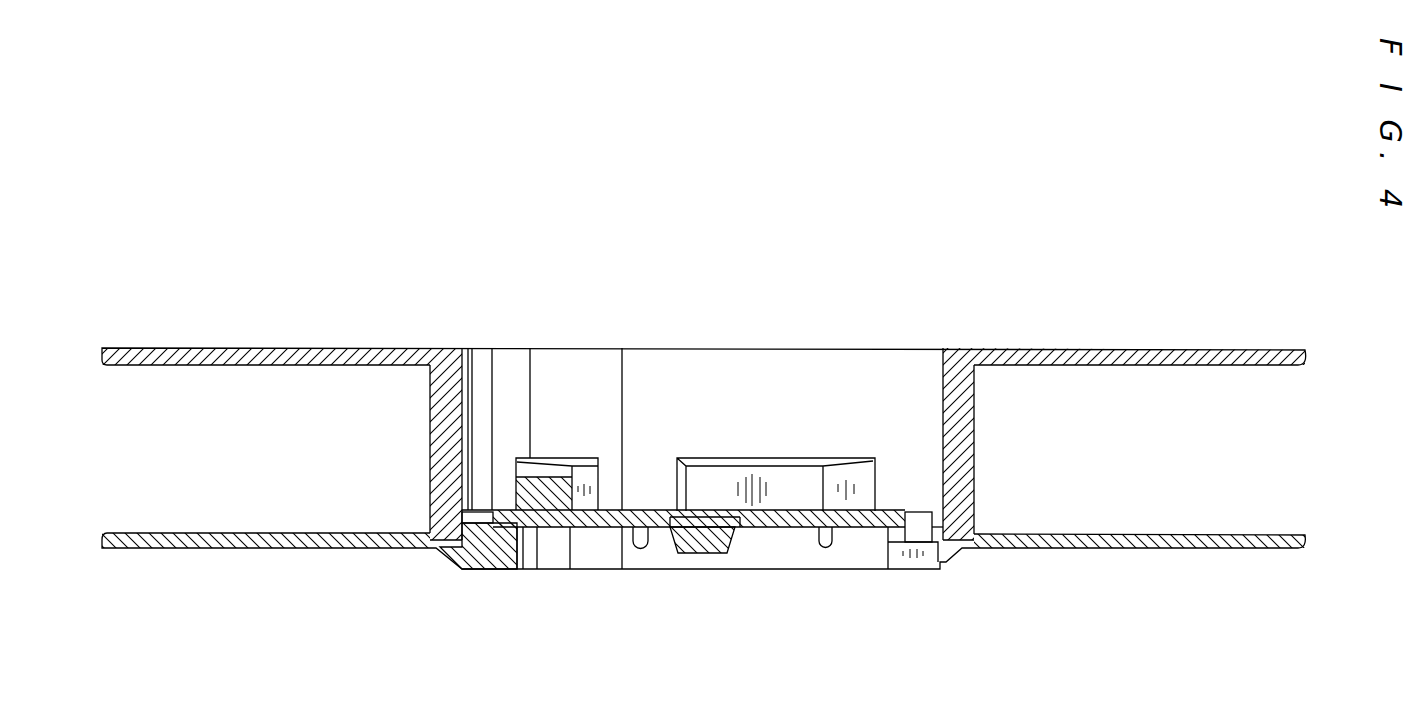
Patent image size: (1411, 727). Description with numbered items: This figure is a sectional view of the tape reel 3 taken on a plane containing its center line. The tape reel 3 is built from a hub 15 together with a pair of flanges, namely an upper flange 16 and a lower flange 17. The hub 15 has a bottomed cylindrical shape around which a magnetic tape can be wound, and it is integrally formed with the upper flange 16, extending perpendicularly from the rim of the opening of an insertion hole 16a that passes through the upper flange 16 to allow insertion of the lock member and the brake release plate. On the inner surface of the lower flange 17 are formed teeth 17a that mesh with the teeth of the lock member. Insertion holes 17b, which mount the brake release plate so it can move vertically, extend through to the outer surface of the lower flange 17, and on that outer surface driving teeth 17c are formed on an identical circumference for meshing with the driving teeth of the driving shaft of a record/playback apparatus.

The tape reel 3 is at (786, 253).
The hub 15 is at (977, 430).
The upper flange 16 is at (1242, 350).
The insertion hole 16a is at (877, 413).
The lower flange 17 is at (1200, 535).
The teeth 17a is at (562, 458).
The insertion holes 17b is at (930, 545).
The driving teeth 17c is at (492, 570).